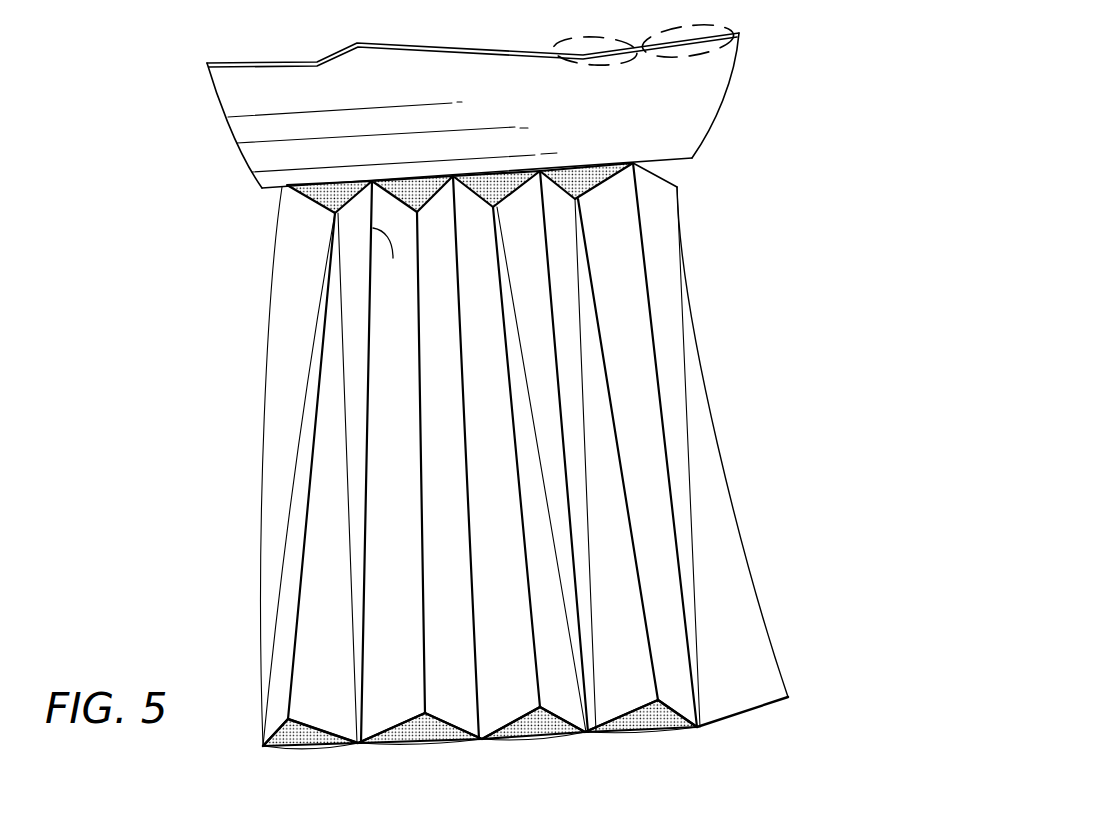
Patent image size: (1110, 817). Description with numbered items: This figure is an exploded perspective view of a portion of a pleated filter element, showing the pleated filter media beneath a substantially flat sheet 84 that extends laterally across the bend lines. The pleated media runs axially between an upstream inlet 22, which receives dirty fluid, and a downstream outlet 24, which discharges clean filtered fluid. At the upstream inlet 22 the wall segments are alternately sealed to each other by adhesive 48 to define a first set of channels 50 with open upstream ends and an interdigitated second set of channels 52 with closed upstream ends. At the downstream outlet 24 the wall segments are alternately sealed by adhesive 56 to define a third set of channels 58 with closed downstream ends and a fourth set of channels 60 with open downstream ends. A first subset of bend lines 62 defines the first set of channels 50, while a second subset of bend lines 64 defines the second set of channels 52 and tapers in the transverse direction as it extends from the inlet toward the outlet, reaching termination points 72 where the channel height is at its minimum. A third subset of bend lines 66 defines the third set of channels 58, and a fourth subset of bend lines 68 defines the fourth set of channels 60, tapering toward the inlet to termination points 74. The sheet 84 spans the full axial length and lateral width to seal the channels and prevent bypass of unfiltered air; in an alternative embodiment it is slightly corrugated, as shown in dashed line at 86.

The upstream inlet 22 is at (784, 735).
The downstream outlet 24 is at (700, 182).
The adhesive 48 is at (298, 753).
The first set of channels 50 is at (327, 712).
The second set of channels 52 is at (420, 738).
The adhesive 56 is at (330, 197).
The third set of channels 58 is at (572, 175).
The fourth set of channels 60 is at (618, 200).
The first subset of bend lines 62 is at (363, 638).
The second subset of bend lines 64 is at (298, 618).
The third subset of bend lines 66 is at (420, 290).
The fourth subset of bend lines 68 is at (399, 462).
The termination points 72 is at (333, 217).
The termination points 74 is at (693, 682).
The flat sheet 84 is at (717, 97).
The corrugated sheet embodiment 86 is at (671, 27).